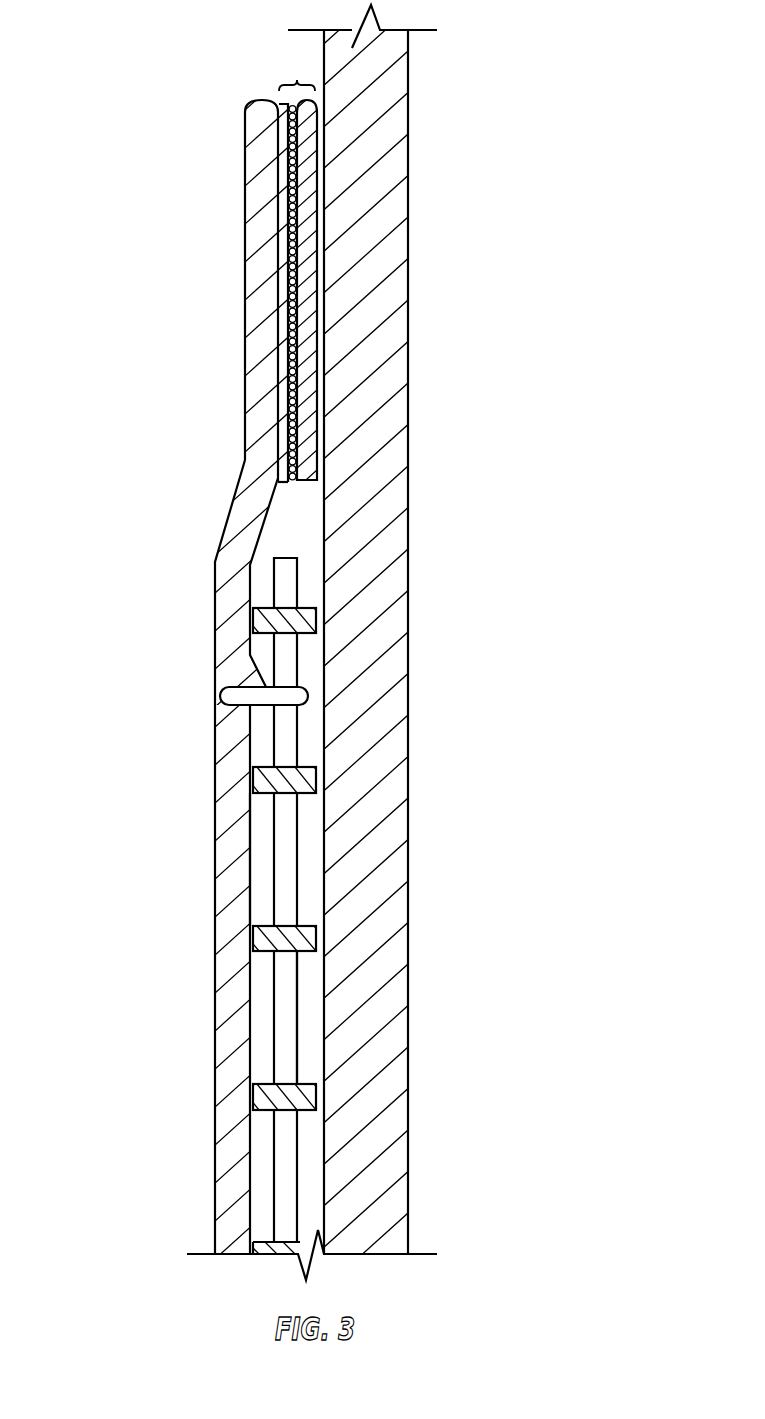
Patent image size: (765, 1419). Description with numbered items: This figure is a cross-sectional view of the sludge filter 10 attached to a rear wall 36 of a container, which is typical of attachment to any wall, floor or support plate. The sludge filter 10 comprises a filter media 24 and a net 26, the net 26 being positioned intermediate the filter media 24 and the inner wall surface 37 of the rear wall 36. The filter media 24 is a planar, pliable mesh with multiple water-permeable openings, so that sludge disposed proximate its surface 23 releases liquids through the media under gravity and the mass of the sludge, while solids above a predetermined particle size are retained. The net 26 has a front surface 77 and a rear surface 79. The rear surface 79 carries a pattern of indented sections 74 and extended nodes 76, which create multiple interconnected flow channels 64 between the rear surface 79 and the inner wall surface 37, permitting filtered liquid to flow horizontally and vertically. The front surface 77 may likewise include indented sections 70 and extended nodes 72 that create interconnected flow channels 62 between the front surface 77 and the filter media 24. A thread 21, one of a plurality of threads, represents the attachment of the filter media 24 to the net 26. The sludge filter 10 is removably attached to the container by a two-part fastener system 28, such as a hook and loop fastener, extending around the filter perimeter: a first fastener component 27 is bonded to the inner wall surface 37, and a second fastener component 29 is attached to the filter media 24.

The sludge filter 10 is at (217, 250).
The thread 21 is at (224, 693).
The surface of filter media 23 is at (218, 1086).
The filter media 24 is at (262, 392).
The net 26 is at (283, 574).
The first fastener component 27 is at (308, 193).
The two-part fastener system 28 is at (297, 72).
The second fastener component 29 is at (285, 193).
The rear wall 36 is at (365, 362).
The inner wall surface 37 is at (316, 524).
The flow channels 62 is at (258, 884).
The flow channels 64 is at (310, 882).
The indented sections 70 is at (256, 836).
The extended nodes 72 is at (262, 781).
The indented sections 74 is at (298, 1017).
The extended nodes 76 is at (258, 936).
The front surface 77 is at (275, 745).
The rear surface 79 is at (298, 743).